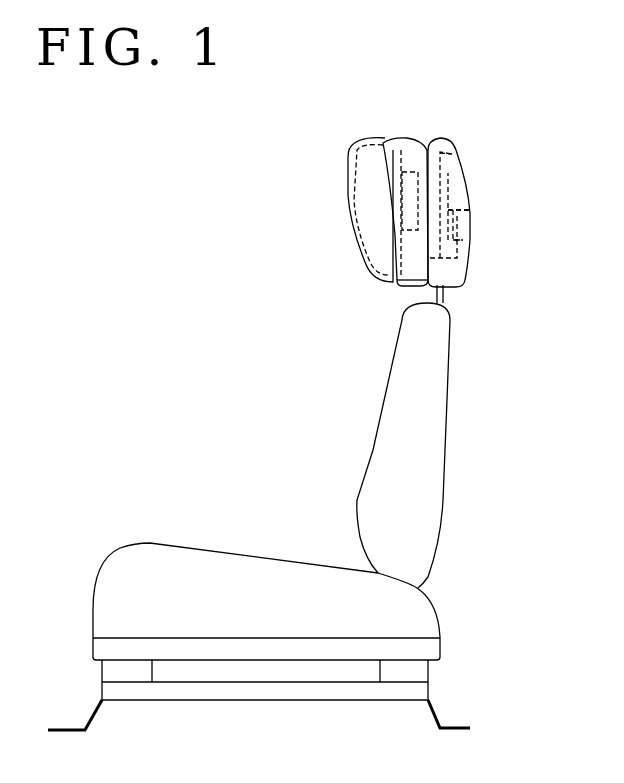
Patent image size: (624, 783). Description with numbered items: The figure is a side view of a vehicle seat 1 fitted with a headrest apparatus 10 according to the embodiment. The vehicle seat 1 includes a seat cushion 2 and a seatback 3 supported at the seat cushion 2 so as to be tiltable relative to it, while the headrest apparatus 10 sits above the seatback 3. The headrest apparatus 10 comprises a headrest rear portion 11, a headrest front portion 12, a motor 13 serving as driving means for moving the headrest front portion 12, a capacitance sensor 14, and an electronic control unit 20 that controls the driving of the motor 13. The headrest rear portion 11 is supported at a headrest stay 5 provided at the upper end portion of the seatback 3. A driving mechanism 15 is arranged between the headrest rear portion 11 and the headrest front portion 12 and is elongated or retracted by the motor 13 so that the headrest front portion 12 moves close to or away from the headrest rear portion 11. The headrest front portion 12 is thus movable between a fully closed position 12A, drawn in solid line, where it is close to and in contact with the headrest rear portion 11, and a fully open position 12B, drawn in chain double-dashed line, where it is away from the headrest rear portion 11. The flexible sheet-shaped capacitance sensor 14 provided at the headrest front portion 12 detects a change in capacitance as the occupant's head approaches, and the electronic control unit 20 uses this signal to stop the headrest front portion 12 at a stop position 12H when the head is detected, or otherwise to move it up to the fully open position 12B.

The vehicle seat 1 is at (190, 365).
The seat cushion 2 is at (262, 566).
The seatback 3 is at (382, 413).
The headrest stay 5 is at (446, 297).
The headrest apparatus for a vehicle 10 is at (364, 110).
The headrest rear portion 11 is at (440, 138).
The headrest front portion 12 is at (407, 137).
The fully closed position 12A is at (403, 283).
The fully open position 12B is at (360, 252).
The stop position 12H is at (348, 150).
The motor 13 is at (455, 246).
The capacitance sensor 14 is at (402, 205).
The driving mechanism 15 is at (432, 210).
The electronic control unit 20 is at (440, 160).